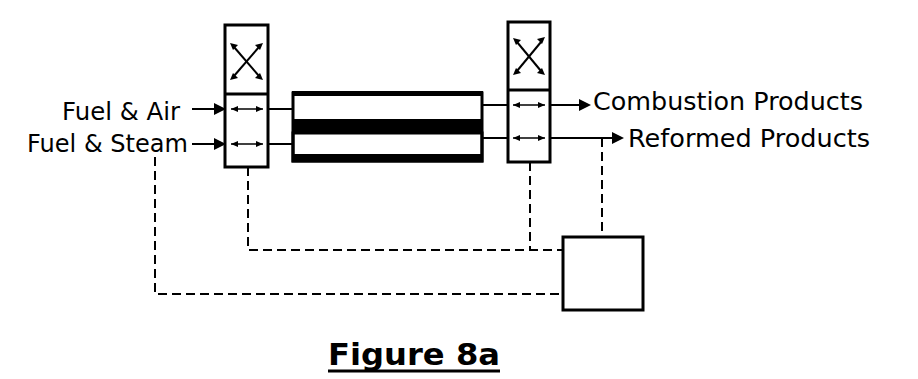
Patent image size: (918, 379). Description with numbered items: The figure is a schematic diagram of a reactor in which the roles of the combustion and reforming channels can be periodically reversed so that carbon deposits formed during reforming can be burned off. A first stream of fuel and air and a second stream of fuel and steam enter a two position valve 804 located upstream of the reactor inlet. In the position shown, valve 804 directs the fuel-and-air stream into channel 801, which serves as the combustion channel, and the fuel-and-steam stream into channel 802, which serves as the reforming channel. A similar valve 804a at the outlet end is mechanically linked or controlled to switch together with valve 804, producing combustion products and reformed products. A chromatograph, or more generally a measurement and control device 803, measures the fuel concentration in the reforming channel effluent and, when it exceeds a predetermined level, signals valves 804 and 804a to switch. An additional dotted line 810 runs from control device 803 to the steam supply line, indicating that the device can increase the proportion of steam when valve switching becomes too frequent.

The channel 801 is at (390, 110).
The channel 802 is at (392, 148).
The chromatograph 803 is at (603, 273).
The two position valve 804 is at (270, 48).
The valve 804a is at (550, 48).
The dotted line 810 is at (185, 295).